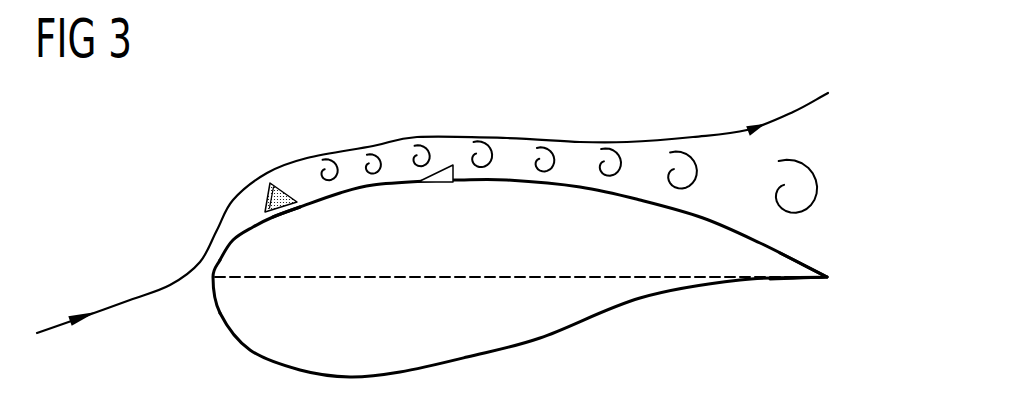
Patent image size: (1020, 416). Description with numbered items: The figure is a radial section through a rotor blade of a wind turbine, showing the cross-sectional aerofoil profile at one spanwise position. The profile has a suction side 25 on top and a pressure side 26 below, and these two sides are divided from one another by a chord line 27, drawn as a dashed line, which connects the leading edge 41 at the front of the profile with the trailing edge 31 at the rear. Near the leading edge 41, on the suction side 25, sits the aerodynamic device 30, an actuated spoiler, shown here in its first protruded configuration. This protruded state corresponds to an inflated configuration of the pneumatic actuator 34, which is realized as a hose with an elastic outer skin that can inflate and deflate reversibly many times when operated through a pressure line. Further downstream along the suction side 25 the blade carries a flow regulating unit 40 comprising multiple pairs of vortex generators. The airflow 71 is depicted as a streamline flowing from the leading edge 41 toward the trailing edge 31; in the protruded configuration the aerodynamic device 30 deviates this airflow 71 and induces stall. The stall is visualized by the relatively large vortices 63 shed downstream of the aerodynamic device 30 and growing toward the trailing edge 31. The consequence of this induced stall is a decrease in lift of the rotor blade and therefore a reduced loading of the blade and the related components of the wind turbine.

The suction side 25 is at (703, 218).
The pressure side 26 is at (640, 298).
The chord line 27 is at (420, 280).
The aerodynamic device 30 is at (313, 222).
The trailing edge 31 is at (828, 278).
The pneumatic actuator 34 is at (283, 188).
The flow regulating unit 40 is at (452, 183).
The leading edge 41 is at (212, 283).
The vortices 63 is at (334, 162).
The airflow 71 is at (128, 297).